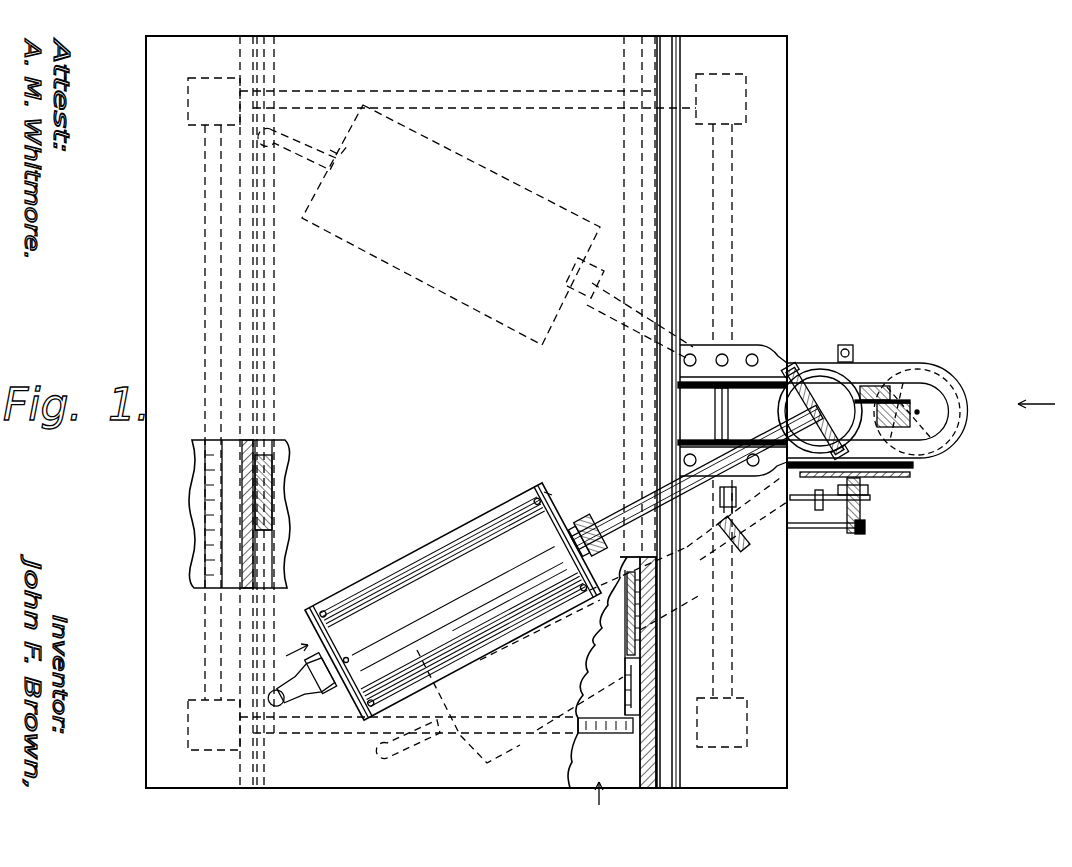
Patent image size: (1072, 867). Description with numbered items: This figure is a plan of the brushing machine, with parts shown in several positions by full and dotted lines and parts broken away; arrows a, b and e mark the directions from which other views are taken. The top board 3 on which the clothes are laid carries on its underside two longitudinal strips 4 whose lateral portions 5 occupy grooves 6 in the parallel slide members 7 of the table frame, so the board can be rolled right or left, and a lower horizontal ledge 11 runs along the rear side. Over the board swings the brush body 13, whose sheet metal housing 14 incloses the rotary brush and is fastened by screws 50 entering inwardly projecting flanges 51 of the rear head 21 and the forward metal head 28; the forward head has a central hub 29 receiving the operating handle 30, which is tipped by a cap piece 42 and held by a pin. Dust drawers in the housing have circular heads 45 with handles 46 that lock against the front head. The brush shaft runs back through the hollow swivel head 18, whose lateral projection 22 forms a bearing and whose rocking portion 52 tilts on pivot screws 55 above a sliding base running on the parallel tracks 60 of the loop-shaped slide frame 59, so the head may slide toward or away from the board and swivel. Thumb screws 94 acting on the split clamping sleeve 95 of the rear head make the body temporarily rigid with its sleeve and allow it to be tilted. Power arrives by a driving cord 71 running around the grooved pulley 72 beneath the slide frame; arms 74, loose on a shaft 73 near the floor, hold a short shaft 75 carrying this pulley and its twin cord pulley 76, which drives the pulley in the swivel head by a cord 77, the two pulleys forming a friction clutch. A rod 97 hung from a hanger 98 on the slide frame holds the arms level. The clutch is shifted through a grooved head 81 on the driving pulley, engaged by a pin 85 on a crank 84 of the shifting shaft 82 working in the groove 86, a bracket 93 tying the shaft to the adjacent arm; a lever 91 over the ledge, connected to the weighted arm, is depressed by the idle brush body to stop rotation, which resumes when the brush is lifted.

The top board 3 is at (466, 412).
The longitudinal strip 4 is at (242, 495).
The lateral portion 5 is at (270, 488).
The groove 6 is at (268, 500).
The slide member 7 is at (262, 560).
The horizontal ledge 11 is at (712, 412).
The brush body 13 is at (475, 396).
The sheet metal housing 14 is at (420, 619).
The swivel head 18 is at (820, 380).
The head of the brush body 21 is at (557, 493).
The lateral projection 22 is at (857, 370).
The forward metal head 28 is at (306, 622).
The central hub 29 is at (343, 680).
The operating handle 30 is at (311, 706).
The cap piece or terminal 42 is at (347, 655).
The circular head 45 is at (365, 722).
The handle 46 is at (355, 716).
The screw 50 is at (325, 612).
The inwardly projecting flange 51 is at (569, 610).
The rocking portion 52 is at (390, 699).
The pivot screw 55 is at (790, 352).
The slide frame 59 is at (900, 357).
The track 60 is at (950, 375).
The driving cord 71 is at (900, 470).
The grooved pulley 72 is at (674, 230).
The shaft 73 is at (715, 416).
The rearwardly extending arm 74 is at (806, 556).
The short shaft 75 is at (862, 505).
The cord pulley 76 is at (905, 390).
The cord 77 is at (785, 412).
The grooved head 81 is at (862, 496).
The shifting shaft 82 is at (830, 508).
The crank 84 is at (829, 505).
The pin 85 is at (864, 526).
The groove 86 is at (870, 490).
The lever 91 is at (742, 550).
The bracket 93 is at (830, 528).
The thumb screw 94 is at (594, 524).
The split clamping sleeve 95 is at (600, 524).
The rod 97 is at (845, 346).
The hanger 98 is at (848, 350).
The arrow a is at (1036, 395).
The arrow b is at (605, 791).
The arrow e is at (333, 638).